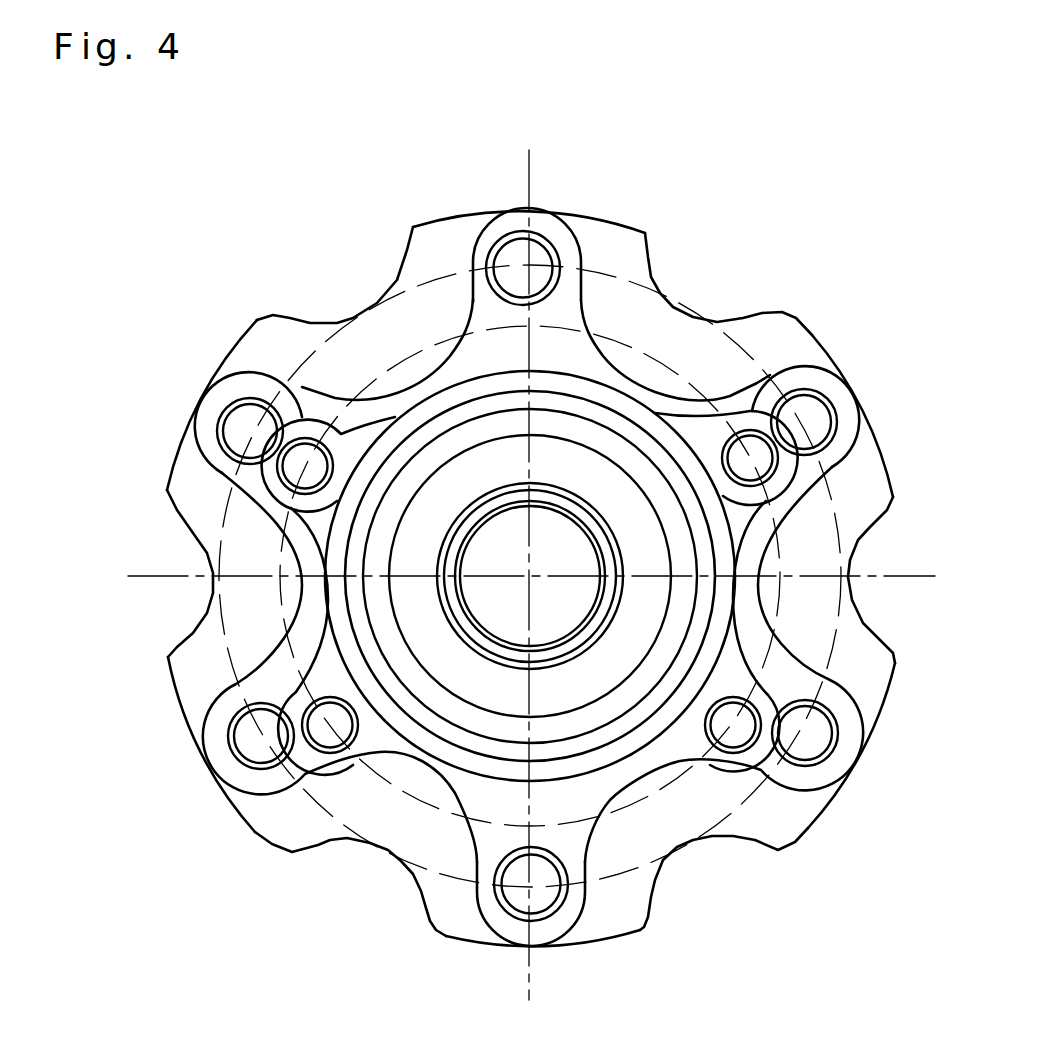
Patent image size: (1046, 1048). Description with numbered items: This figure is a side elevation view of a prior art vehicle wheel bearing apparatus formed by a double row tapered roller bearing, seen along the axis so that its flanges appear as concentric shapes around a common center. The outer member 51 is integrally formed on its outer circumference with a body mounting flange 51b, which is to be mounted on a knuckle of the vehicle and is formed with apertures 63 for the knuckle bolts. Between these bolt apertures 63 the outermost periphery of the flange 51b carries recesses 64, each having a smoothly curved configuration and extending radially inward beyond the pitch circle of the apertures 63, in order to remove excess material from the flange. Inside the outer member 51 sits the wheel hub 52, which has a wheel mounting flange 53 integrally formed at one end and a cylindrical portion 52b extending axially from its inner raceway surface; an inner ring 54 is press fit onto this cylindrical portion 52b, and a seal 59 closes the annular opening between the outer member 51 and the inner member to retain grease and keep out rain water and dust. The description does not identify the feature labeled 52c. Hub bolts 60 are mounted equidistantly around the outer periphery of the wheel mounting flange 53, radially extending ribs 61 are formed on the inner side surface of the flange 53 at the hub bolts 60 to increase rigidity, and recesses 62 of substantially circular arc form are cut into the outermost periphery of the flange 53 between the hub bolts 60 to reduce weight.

The outer member 51 is at (310, 616).
The body mounting flange 51b is at (780, 420).
The wheel hub 52 is at (180, 494).
The cylindrical portion 52b is at (498, 505).
The inner bore 52c is at (573, 630).
The wheel mounting flange 53 is at (235, 350).
The inner ring 54 is at (577, 683).
The seal 59 is at (466, 714).
The hub bolts 60 is at (513, 262).
The radially extending ribs 61 is at (470, 312).
The recesses 62 is at (678, 275).
The apertures 63 is at (742, 440).
The recesses 64 is at (782, 553).